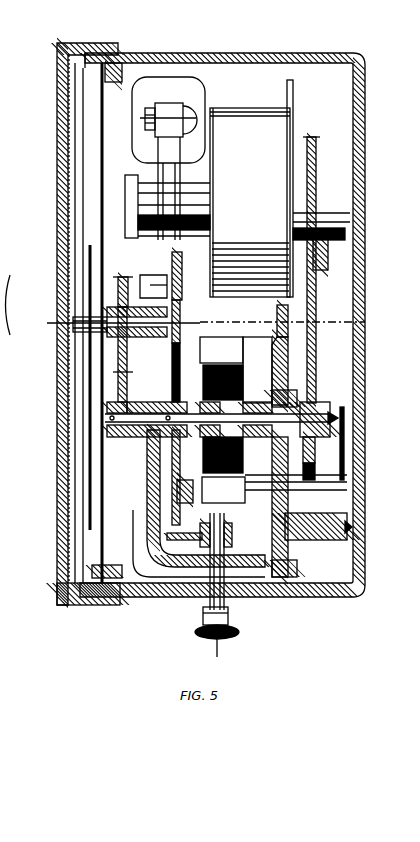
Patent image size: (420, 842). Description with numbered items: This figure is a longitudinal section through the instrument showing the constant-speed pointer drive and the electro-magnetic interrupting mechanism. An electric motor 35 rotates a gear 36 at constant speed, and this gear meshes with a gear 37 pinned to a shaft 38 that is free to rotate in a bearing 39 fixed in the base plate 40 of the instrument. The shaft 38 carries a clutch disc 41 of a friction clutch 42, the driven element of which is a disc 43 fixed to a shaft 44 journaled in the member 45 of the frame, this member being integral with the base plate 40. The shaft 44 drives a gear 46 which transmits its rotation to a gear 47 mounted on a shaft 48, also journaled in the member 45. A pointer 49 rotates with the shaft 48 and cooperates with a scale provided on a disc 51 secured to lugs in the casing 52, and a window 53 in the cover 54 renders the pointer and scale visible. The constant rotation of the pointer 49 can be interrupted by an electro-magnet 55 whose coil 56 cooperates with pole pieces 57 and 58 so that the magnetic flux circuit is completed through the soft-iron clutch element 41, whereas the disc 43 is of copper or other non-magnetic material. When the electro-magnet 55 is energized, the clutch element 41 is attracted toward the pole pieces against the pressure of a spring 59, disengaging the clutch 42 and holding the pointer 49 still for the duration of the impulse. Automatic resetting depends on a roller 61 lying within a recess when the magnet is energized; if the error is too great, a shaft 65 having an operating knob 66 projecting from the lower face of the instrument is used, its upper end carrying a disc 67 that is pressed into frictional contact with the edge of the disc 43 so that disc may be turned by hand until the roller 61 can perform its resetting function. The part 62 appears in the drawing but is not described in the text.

The electric motor 35 is at (278, 132).
The gear 36 is at (316, 298).
The gear 37 is at (316, 393).
The shaft 38 is at (330, 440).
The bearing 39 is at (243, 437).
The base plate 40 is at (272, 352).
The clutch disc 41 is at (200, 345).
The friction clutch 42 is at (177, 500).
The disc 43 is at (175, 470).
The shaft 44 is at (103, 423).
The member 45 is at (145, 512).
The gear 46 is at (107, 398).
The gear 47 is at (118, 348).
The shaft 48 is at (105, 297).
The pointer 49 is at (88, 260).
The disc 51 is at (107, 107).
The casing 52 is at (262, 53).
The window 53 is at (66, 100).
The cover 54 is at (83, 43).
The electro-magnet 55 is at (258, 505).
The coil 56 is at (245, 380).
The pole piece 57 is at (233, 490).
The pole piece 58 is at (230, 340).
The spring 59 is at (344, 412).
The roller 61 is at (190, 258).
The bracket 62 is at (185, 275).
The shaft 65 is at (208, 603).
The operating knob 66 is at (232, 637).
The disc 67 is at (110, 604).